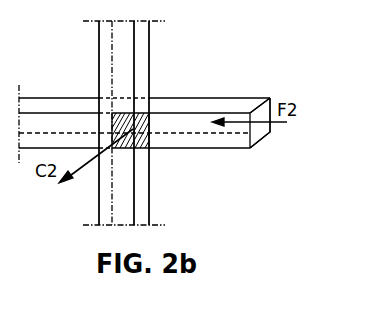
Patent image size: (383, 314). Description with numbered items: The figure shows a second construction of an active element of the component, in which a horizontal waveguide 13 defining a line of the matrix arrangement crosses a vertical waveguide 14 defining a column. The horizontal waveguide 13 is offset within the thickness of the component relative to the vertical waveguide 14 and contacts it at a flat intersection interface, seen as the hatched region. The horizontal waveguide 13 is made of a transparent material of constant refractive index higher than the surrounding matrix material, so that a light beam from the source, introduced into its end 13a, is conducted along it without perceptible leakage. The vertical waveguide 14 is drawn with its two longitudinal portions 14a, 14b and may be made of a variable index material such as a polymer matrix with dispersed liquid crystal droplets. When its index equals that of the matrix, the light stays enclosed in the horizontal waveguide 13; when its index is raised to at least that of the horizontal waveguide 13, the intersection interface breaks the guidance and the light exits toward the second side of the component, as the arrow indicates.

The horizontal waveguide 13 is at (238, 104).
The end of horizontal waveguide 13a is at (262, 126).
The vertical waveguide 14 is at (150, 45).
The first portion of member 14 14a is at (143, 71).
The second portion of member 14 14b is at (106, 59).